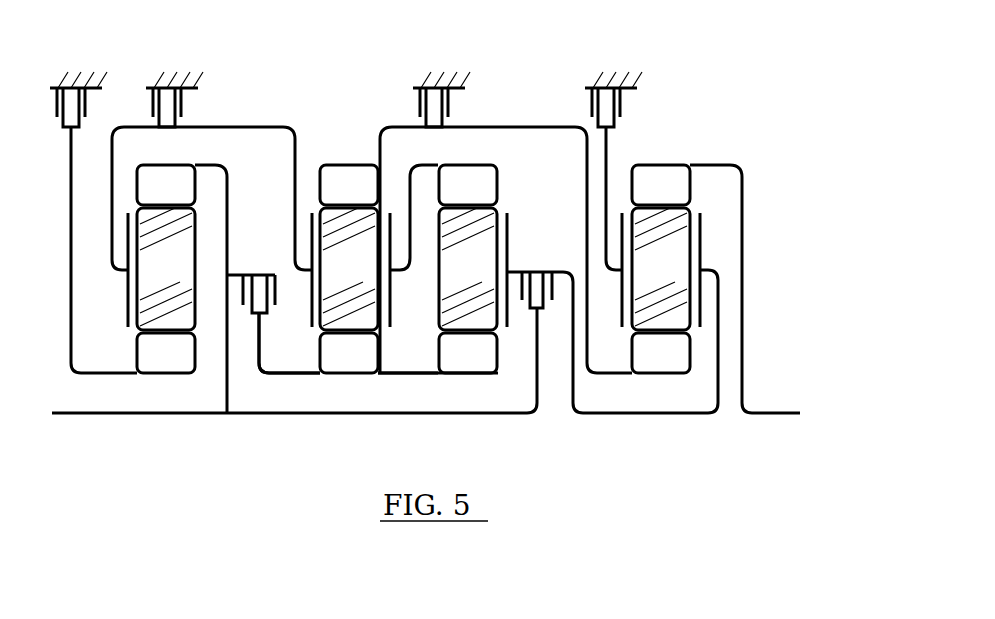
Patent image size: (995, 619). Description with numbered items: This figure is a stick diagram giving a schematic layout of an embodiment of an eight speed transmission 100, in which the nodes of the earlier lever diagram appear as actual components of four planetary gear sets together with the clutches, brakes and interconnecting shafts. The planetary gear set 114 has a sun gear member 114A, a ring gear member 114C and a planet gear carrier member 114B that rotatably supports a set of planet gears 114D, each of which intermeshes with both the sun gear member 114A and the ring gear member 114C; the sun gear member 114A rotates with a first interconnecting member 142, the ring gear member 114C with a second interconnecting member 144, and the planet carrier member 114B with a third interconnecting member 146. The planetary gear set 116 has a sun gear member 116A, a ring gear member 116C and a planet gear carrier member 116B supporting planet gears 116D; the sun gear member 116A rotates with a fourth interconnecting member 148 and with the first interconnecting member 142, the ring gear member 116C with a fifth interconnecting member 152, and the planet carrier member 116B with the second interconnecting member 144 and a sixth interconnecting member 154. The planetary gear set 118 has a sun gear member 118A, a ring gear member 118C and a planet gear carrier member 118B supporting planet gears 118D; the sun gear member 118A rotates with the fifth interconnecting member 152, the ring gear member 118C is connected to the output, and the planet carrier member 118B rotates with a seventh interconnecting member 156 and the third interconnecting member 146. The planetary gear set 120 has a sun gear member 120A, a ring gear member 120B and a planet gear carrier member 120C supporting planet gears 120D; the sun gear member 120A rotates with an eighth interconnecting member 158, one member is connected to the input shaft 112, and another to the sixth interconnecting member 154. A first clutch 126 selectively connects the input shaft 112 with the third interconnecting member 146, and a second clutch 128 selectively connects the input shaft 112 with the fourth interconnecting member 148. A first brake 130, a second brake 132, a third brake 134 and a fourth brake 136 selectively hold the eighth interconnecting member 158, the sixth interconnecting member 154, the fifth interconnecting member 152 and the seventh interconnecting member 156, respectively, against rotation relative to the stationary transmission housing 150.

The eight speed transmission 100 is at (713, 61).
The input shaft 112 is at (97, 418).
The planetary gear set 114 is at (464, 395).
The sun gear member 114A is at (445, 364).
The planet gear carrier member 114B is at (509, 223).
The ring gear member 114C is at (445, 196).
The planet gears 114D is at (445, 281).
The planetary gear set 116 is at (350, 395).
The sun gear member 116A is at (326, 364).
The planet gear carrier member 116B is at (311, 219).
The ring gear member 116C is at (326, 196).
The planet gears 116D is at (326, 281).
The planetary gear set 118 is at (662, 395).
The sun gear member 118A is at (638, 364).
The planet gear carrier member 118B is at (703, 246).
The ring gear member 118C is at (638, 196).
The planet gears 118D is at (638, 281).
The planetary gear set 120 is at (176, 395).
The sun gear member 120A is at (143, 364).
The ring gear member 120B is at (127, 309).
The planet gear carrier member 120C is at (143, 196).
The planet gears 120D is at (143, 281).
The first clutch 126 is at (529, 312).
The second clutch 128 is at (240, 291).
The first brake 130 is at (56, 106).
The second brake 132 is at (185, 97).
The third brake 134 is at (451, 105).
The fourth brake 136 is at (621, 104).
The first interconnecting member 142 is at (404, 374).
The second interconnecting member 144 is at (428, 165).
The third interconnecting member 146 is at (553, 270).
The fourth interconnecting member 148 is at (290, 374).
The transmission housing 150 is at (104, 80).
The fifth interconnecting member 152 is at (389, 126).
The sixth interconnecting member 154 is at (233, 127).
The seventh interconnecting member 156 is at (608, 147).
The eighth interconnecting member 158 is at (68, 198).